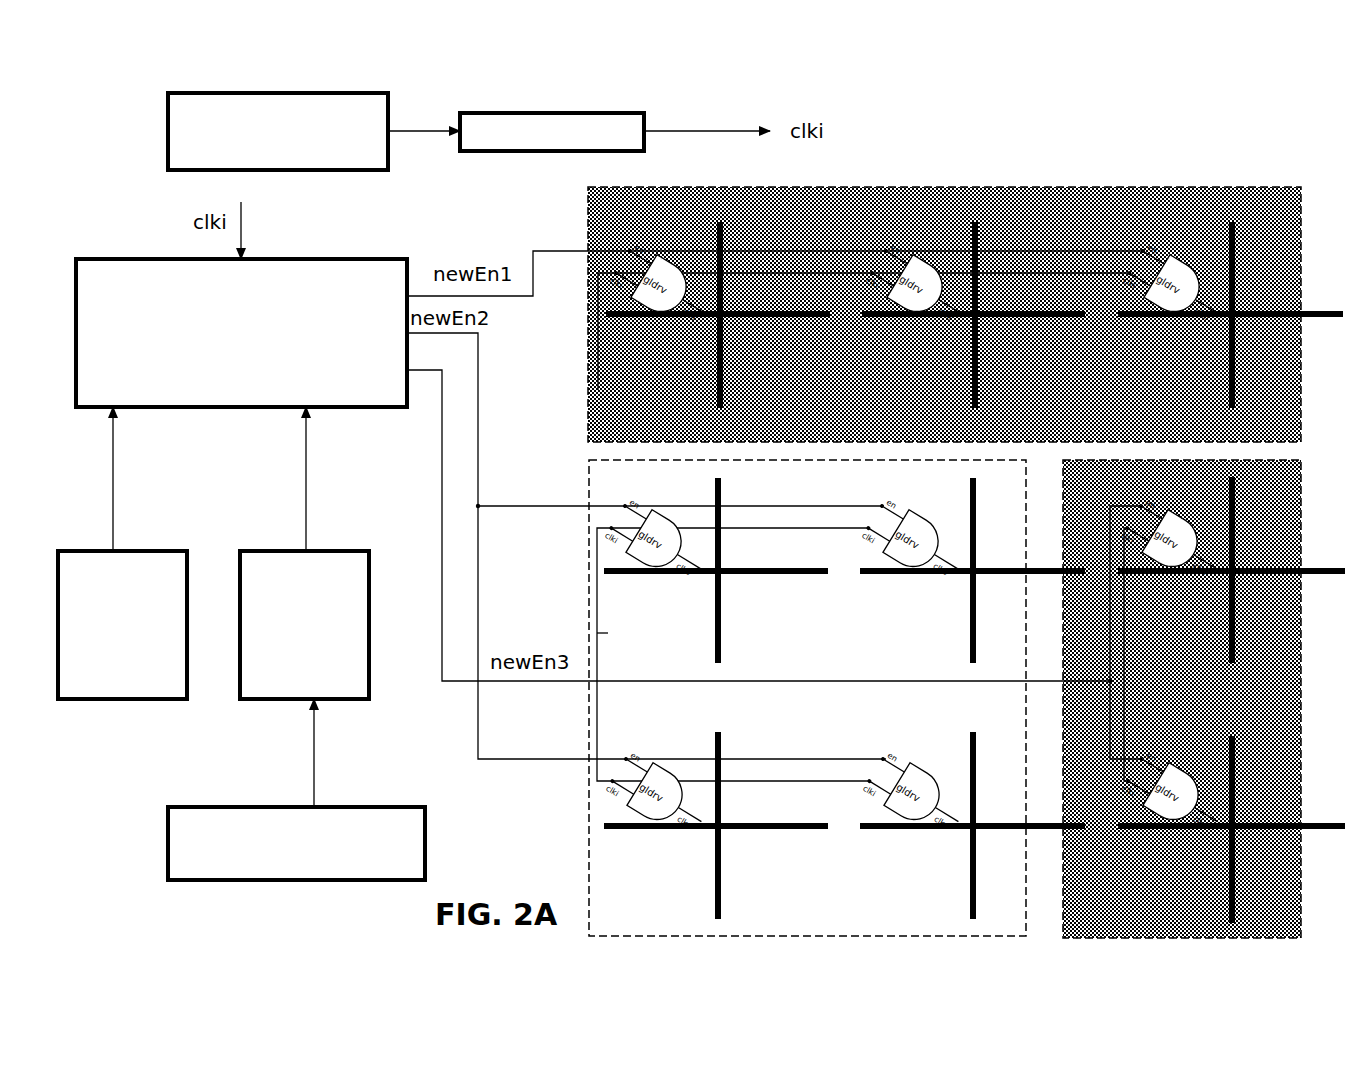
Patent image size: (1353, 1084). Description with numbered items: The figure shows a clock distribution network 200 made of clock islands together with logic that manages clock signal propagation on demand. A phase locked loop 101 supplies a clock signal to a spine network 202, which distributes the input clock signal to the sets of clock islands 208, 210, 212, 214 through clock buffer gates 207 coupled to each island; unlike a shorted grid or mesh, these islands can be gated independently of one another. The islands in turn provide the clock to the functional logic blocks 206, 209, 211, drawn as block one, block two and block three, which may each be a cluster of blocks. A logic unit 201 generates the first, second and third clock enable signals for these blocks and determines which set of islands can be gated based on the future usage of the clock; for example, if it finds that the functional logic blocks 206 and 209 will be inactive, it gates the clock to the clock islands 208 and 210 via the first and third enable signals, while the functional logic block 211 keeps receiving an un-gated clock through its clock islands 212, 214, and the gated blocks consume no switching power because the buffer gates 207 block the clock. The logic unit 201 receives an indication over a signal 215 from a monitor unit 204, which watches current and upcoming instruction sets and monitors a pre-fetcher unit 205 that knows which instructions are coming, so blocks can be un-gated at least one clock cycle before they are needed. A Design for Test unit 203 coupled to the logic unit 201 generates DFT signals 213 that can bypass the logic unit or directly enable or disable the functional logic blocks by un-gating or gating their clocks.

The phase locked loop 101 is at (278, 131).
The clock distribution network 200 is at (1007, 119).
The logic unit 201 is at (241, 333).
The spine network 202 is at (460, 113).
The Design for Test (DFT) unit 203 is at (122, 625).
The monitor unit 204 is at (304, 625).
The pre-fetcher unit 205 is at (296, 843).
The functional logic block 206 is at (1080, 187).
The clock buffer gate 207 is at (923, 267).
The clock island 208 is at (720, 360).
The functional logic block 209 is at (1153, 938).
The clock island 210 is at (1232, 579).
The functional logic block 211 is at (793, 936).
The clock island 212 is at (718, 622).
The DFT signals 213 is at (113, 478).
The clock island 214 is at (717, 880).
The signal 215 is at (306, 478).